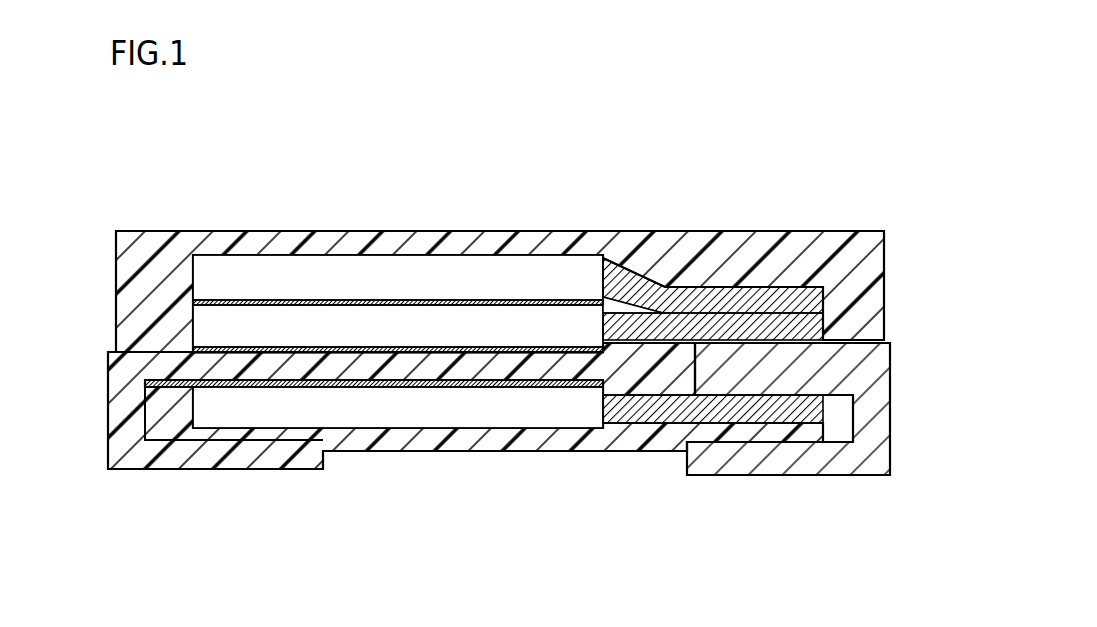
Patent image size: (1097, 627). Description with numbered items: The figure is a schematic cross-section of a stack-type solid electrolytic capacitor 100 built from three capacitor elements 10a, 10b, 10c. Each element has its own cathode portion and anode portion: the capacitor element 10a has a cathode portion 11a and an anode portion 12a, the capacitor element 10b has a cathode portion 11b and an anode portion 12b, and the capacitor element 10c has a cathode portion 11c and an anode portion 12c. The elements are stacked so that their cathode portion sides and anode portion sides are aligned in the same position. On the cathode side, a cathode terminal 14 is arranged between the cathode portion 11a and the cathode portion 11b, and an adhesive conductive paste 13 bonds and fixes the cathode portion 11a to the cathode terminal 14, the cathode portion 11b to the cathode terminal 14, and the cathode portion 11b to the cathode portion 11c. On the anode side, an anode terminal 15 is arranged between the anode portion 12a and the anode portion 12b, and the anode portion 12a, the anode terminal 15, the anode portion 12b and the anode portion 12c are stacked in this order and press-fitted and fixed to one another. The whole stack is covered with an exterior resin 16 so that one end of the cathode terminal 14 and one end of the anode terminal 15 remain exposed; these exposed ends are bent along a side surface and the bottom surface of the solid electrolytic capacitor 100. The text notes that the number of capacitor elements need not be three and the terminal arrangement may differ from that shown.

The solid electrolytic capacitor 100 is at (478, 136).
The capacitor element 10a is at (508, 477).
The capacitor element 10b is at (508, 231).
The capacitor element 10c is at (508, 214).
The cathode portion 11a is at (490, 412).
The cathode portion 11b is at (605, 326).
The cathode portion 11c is at (578, 270).
The anode portion 12a is at (713, 461).
The anode portion 12b is at (697, 323).
The anode portion 12c is at (612, 278).
The conductive paste 13 is at (330, 345).
The cathode terminal 14 is at (168, 455).
The anode terminal 15 is at (813, 462).
The exterior resin 16 is at (200, 248).